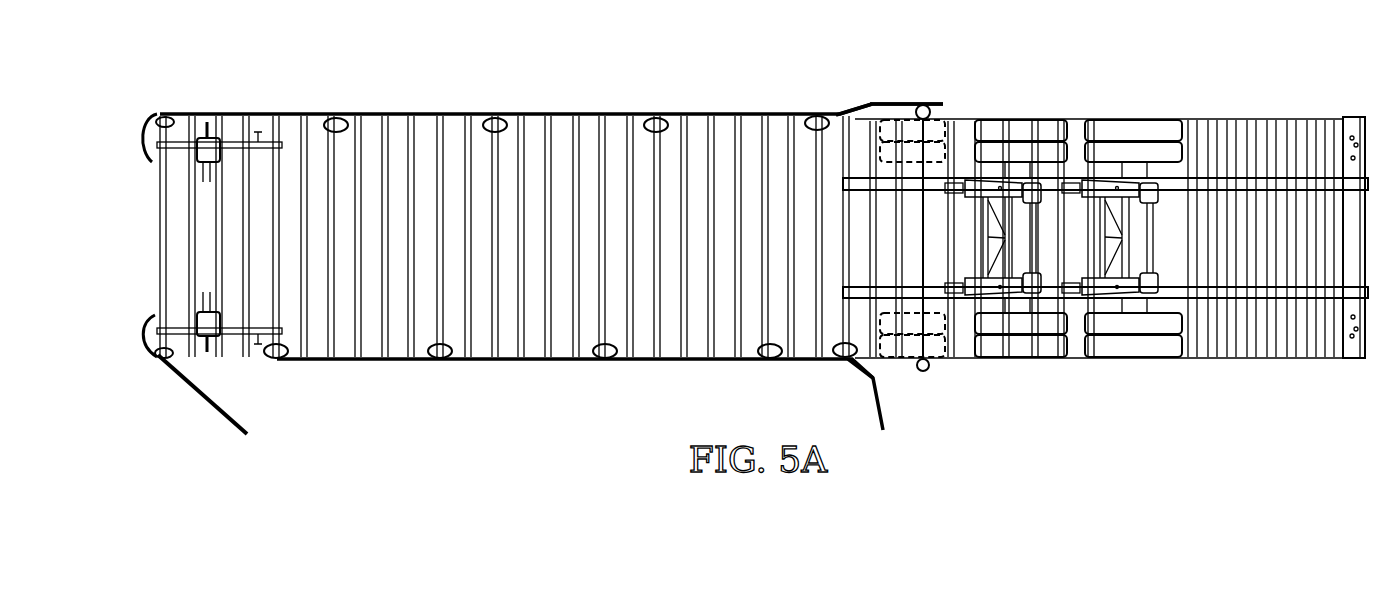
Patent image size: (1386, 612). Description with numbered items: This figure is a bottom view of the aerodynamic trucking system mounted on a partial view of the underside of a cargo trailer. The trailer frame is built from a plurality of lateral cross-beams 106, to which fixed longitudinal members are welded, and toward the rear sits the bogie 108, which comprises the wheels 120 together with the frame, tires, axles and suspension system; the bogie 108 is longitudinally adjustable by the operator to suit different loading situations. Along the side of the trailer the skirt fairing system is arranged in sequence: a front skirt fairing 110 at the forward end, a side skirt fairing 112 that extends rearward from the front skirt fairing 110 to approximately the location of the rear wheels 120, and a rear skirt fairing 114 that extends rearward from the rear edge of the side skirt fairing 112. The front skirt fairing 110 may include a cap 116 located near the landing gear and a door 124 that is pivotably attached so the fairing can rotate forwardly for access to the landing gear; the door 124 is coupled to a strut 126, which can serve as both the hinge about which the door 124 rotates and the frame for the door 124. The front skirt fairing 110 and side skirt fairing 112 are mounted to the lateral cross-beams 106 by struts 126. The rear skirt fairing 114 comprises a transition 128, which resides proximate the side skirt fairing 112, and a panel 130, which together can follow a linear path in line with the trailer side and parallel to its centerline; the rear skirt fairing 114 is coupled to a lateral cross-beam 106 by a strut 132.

The lateral cross-beam 106 is at (559, 154).
The bogie 108 is at (1078, 307).
The front skirt fairing 110 is at (232, 109).
The side skirt fairing 112 is at (436, 87).
The rear skirt fairing 114 is at (899, 100).
The cap 116 is at (146, 131).
The wheels 120 is at (1079, 102).
The door 124 is at (210, 400).
The strut 126 is at (326, 118).
The transition 128 is at (853, 107).
The panel 130 is at (932, 104).
The strut 132 is at (932, 112).